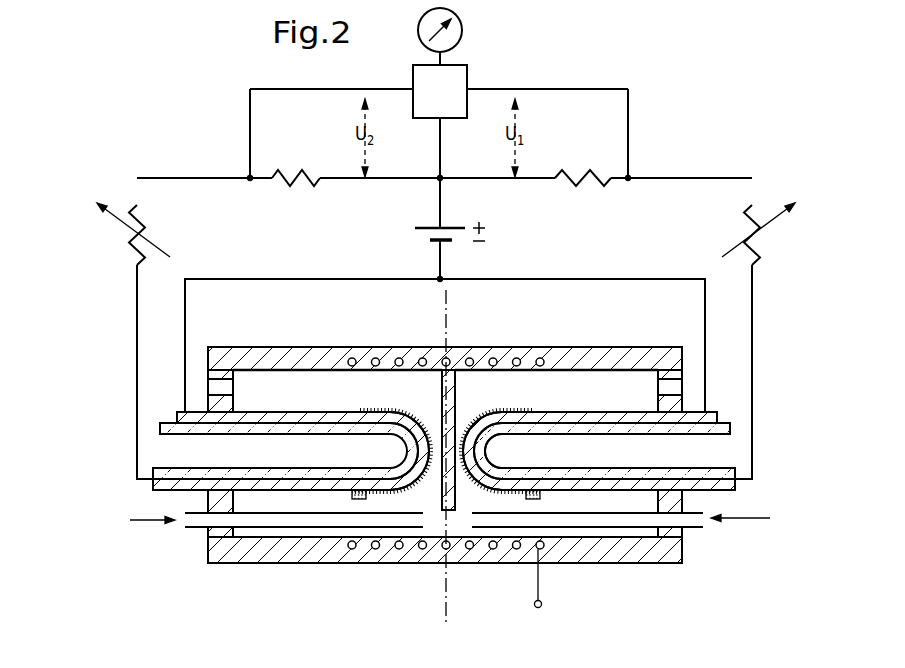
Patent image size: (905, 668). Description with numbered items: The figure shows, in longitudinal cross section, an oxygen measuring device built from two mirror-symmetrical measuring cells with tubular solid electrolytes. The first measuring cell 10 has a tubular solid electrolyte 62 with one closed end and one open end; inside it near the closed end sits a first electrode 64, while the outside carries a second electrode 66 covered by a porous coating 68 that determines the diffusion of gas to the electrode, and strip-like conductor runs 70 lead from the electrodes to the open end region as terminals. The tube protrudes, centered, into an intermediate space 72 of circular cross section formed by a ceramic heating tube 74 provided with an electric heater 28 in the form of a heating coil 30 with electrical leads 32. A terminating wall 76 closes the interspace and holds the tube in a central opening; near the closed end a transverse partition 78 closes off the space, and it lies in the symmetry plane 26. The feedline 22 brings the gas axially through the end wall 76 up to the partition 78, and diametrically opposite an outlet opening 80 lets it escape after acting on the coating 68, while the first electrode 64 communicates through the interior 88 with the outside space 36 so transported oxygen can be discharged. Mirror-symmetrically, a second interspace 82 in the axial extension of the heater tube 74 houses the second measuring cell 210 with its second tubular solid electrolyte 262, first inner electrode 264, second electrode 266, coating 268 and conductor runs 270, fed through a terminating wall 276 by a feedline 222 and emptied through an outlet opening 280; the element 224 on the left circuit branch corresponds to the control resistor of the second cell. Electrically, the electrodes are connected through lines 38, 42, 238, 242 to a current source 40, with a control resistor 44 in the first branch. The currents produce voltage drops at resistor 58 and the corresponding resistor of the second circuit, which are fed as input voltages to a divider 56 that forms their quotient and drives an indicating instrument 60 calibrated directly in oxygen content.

The first measuring cell 10 is at (441, 459).
The feedline 22 is at (700, 510).
The symmetry plane 26 is at (446, 333).
The heater 28 is at (445, 583).
The heating coil 30 is at (471, 549).
The electrical leads 32 is at (350, 549).
The outside space 36 is at (631, 413).
The electrical line 38 is at (752, 313).
The current source 40 is at (428, 236).
The electrical line 42 is at (627, 278).
The control resistor 44 is at (745, 228).
The divider 56 is at (467, 76).
The electric resistor 58 is at (570, 183).
The indicating instrument 60 is at (463, 30).
The tubular solid electrolyte 62 is at (731, 425).
The first electrode 64 is at (546, 477).
The second electrode 66 is at (535, 409).
The porous coating 68 is at (476, 422).
The conductor runs 70 is at (610, 412).
The intermediate space 72 is at (590, 377).
The heating tube 74 is at (540, 347).
The terminating wall 76 is at (684, 545).
The transverse partition 78 is at (452, 387).
The outlet opening 80 is at (675, 385).
The second interspace 82 is at (293, 377).
The interior 88 is at (440, 413).
The second measuring cell 210 is at (239, 569).
The feedline 222 is at (193, 512).
The discharge line 224 is at (127, 240).
The electrical line 238 is at (137, 308).
The electrical line 242 is at (220, 278).
The second tubular solid electrolyte 262 is at (160, 424).
The first inner electrode 264 is at (343, 467).
The second electrode 266 is at (378, 412).
The coating 268 is at (407, 414).
The conductor runs 270 is at (272, 418).
The terminating wall 276 is at (206, 545).
The outlet opening 280 is at (215, 388).